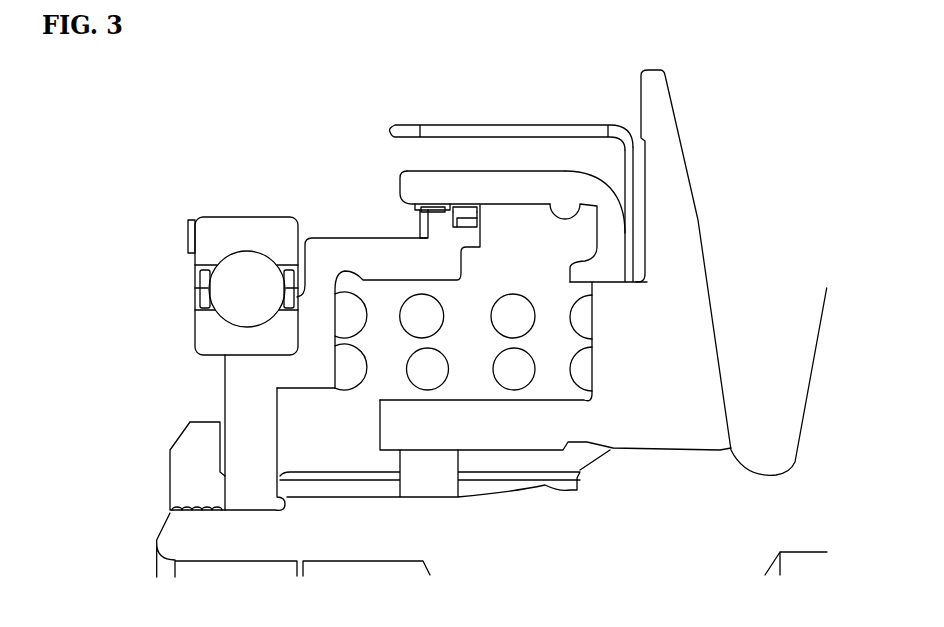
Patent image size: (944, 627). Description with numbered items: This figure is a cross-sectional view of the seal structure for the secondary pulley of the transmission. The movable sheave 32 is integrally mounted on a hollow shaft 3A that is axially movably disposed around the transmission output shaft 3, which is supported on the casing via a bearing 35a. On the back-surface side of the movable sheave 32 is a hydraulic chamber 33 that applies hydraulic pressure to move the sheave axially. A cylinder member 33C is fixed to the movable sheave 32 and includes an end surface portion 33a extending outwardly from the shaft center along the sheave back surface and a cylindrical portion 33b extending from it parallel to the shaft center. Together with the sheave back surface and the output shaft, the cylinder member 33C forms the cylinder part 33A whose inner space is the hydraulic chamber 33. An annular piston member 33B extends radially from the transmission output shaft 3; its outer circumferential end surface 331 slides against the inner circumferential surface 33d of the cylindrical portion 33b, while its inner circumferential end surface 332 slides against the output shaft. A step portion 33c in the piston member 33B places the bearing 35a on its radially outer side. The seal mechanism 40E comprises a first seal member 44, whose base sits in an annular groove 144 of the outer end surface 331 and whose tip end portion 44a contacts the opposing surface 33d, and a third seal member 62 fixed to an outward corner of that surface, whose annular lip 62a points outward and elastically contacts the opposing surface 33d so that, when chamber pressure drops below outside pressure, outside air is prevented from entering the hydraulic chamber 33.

The transmission output shaft 3 is at (372, 553).
The hollow shaft 3A is at (523, 442).
The movable sheave 32 is at (664, 99).
The hydraulic chamber 33 is at (527, 283).
The cylinder part 33A is at (385, 163).
The piston member 33B is at (340, 245).
The cylinder member 33C is at (497, 152).
The end surface portion 33a is at (620, 234).
The cylindrical portion 33b is at (547, 178).
The step portion 33c is at (240, 353).
The inner circumferential surface (opposing surface) 33d is at (583, 207).
The outer circumferential end surface 331 is at (447, 203).
The inner circumferential end surface 332 is at (252, 512).
The bearing 35a is at (216, 289).
The seal mechanism 40E is at (441, 152).
The first seal member 44 is at (478, 212).
The tip end portion 44a is at (468, 205).
The annular groove 144 is at (483, 224).
The third seal member 62 is at (405, 216).
The annular lip 62a is at (400, 187).